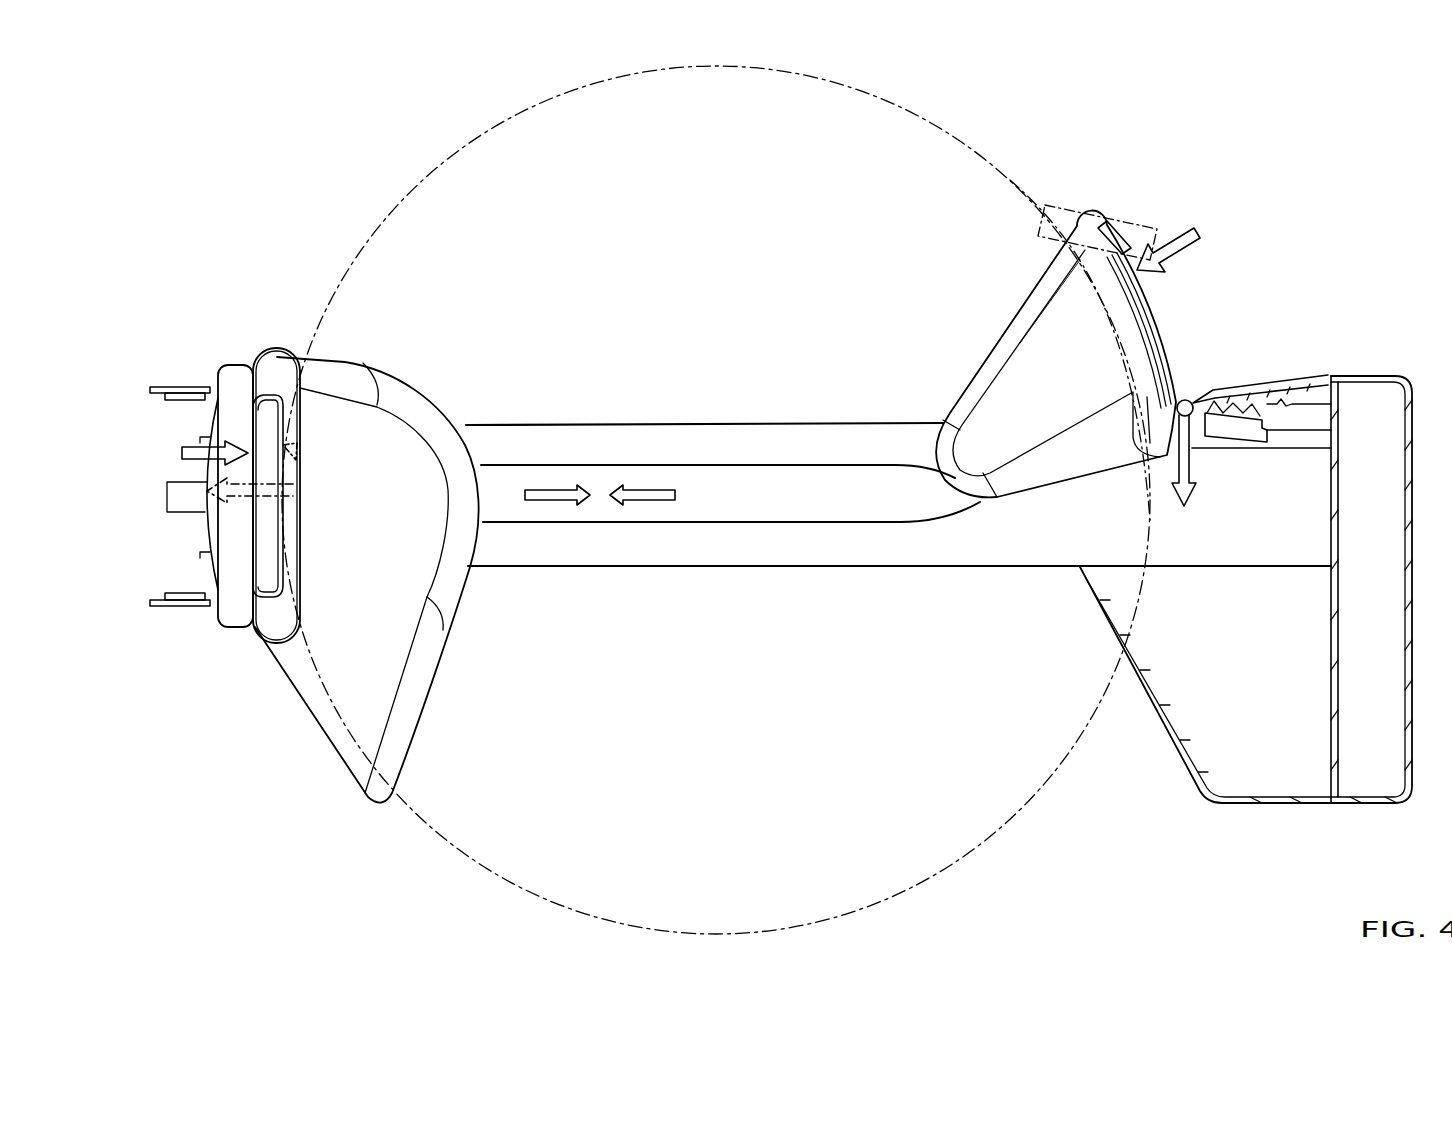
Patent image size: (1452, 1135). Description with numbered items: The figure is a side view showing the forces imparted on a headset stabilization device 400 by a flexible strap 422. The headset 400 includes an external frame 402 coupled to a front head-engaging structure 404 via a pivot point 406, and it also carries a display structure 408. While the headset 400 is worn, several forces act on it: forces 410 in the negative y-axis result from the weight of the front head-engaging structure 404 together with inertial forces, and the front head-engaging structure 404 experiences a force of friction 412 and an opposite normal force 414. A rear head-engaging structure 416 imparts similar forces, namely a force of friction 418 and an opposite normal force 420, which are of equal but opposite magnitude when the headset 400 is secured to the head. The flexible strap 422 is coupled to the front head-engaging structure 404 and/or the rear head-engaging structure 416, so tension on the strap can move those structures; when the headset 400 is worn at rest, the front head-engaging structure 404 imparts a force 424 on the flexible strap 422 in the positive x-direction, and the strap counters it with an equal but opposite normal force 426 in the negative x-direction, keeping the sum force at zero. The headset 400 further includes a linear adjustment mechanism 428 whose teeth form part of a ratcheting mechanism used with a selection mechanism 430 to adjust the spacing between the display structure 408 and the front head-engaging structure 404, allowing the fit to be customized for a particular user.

The headset stabilization device 400 is at (182, 108).
The external frame 402 is at (943, 540).
The front head-engaging structure 404 is at (1043, 357).
The pivot point 406 is at (1188, 400).
The display structure 408 is at (1368, 778).
The forces 410 is at (1182, 501).
The force of friction 412 is at (1047, 223).
The normal force 414 is at (1135, 240).
The rear head-engaging structure 416 is at (277, 363).
The force of friction 418 is at (287, 460).
The normal force 420 is at (252, 490).
The flexible strap 422 is at (810, 502).
The force 424 is at (210, 453).
The normal force 426 is at (622, 503).
The linear adjustment mechanism 428 is at (1242, 410).
The selection mechanism 430 is at (1256, 400).